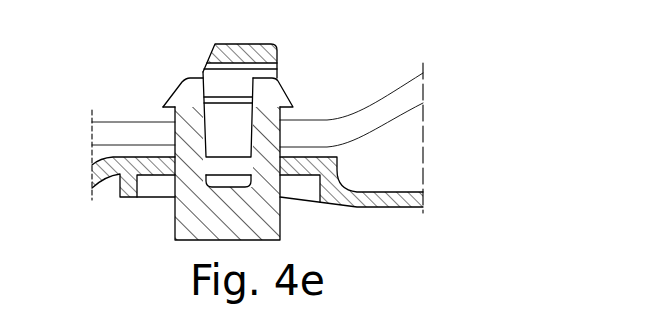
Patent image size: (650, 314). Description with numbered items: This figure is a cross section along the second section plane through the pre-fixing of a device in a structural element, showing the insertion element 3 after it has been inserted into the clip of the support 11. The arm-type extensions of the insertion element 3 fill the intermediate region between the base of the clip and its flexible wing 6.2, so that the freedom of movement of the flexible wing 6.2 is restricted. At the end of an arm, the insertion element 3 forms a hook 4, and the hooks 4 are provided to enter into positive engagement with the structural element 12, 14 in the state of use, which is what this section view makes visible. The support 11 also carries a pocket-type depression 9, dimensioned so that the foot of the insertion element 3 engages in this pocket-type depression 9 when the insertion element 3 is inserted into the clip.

The insertion element 3 is at (258, 218).
The hook 4 is at (177, 97).
The flexible wing 6.2 is at (223, 122).
The pocket-type depression 9 is at (162, 188).
The support 11 is at (424, 197).
The structural element 12 is at (407, 103).
The structural element 14 is at (257, 125).